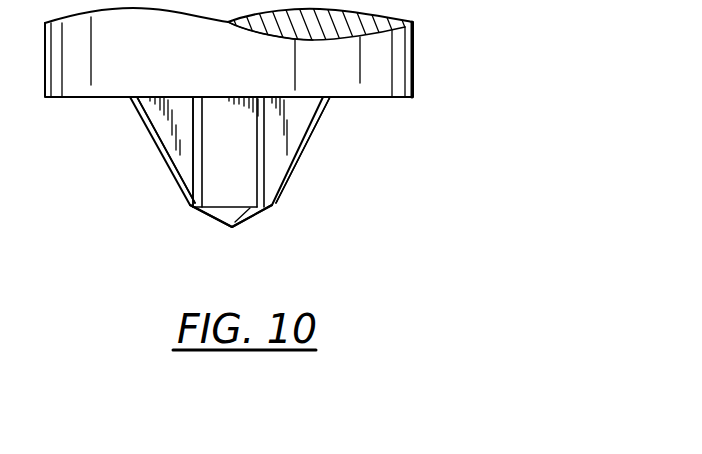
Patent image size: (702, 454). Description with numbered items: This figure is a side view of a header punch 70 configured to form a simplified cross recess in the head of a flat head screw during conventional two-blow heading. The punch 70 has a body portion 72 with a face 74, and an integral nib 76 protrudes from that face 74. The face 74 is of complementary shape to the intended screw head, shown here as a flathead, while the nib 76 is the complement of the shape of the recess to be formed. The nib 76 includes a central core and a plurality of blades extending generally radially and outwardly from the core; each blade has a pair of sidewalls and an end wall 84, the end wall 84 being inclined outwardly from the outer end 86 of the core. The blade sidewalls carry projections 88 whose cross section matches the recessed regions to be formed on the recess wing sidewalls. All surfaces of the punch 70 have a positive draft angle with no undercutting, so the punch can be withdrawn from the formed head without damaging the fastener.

The punch 70 is at (416, 132).
The body portion 72 is at (415, 50).
The face 74 is at (405, 97).
The nib 76 is at (324, 199).
The end wall 84 is at (147, 131).
The outer end of the core 86 is at (245, 222).
The projections 88 is at (188, 160).